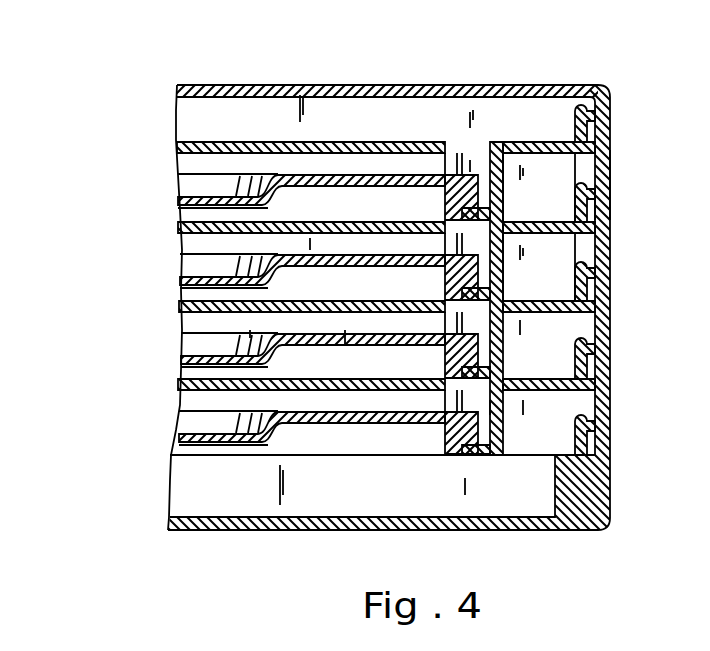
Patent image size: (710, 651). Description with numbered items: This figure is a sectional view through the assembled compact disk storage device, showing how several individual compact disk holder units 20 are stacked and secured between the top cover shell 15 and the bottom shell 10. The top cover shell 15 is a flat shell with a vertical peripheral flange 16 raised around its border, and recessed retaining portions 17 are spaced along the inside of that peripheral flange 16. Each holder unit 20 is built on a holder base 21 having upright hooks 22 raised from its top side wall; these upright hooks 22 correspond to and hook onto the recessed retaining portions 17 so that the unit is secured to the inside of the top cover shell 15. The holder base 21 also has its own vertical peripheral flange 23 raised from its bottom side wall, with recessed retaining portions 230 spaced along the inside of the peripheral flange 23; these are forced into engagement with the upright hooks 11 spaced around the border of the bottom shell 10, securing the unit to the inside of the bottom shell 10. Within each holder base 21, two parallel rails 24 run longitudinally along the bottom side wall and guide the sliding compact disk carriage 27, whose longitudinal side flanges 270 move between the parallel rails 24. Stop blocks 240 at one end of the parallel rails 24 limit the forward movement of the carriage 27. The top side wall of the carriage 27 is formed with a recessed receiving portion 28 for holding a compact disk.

The bottom shell 10 is at (608, 504).
The upright hooks 11 is at (598, 443).
The top cover shell 15 is at (571, 86).
The vertical peripheral flange 16 is at (610, 134).
The recessed retaining portions 17 is at (593, 96).
The individual compact disk holder unit 20 is at (609, 186).
The holder base 21 is at (397, 142).
The upright hooks 22 is at (586, 124).
The vertical peripheral flange 23 is at (605, 207).
The parallel rails 24 is at (482, 168).
The sliding compact disk carriage 27 is at (350, 174).
The recessed receiving portion 28 is at (213, 186).
The recessed retaining portions 230 is at (583, 182).
The stop blocks 240 is at (458, 201).
The longitudinal side flanges 270 is at (462, 277).